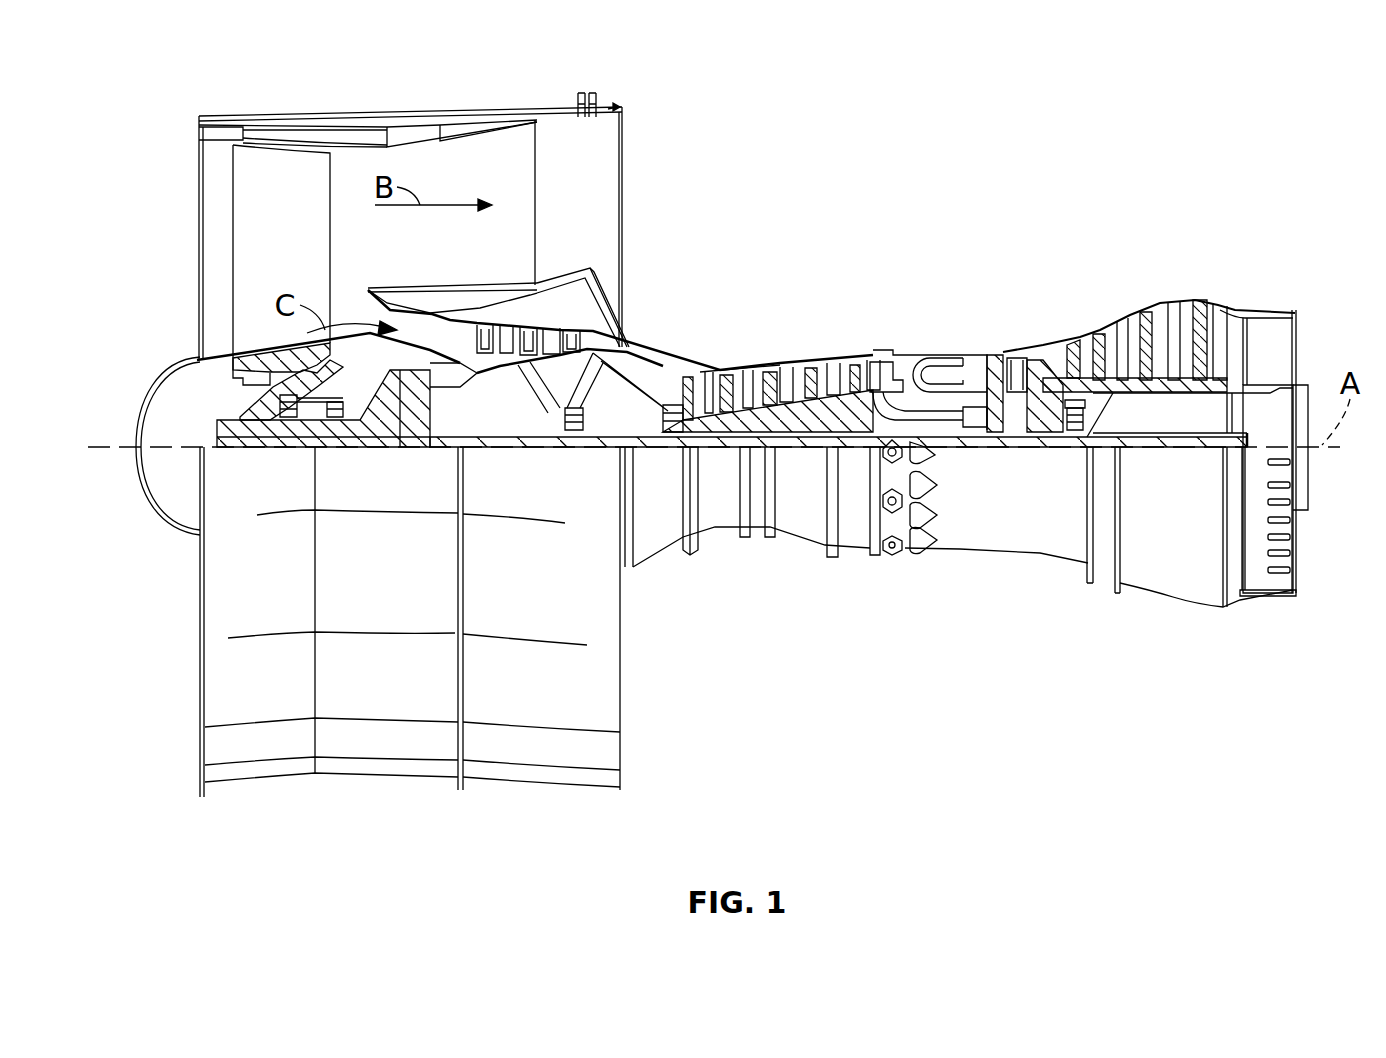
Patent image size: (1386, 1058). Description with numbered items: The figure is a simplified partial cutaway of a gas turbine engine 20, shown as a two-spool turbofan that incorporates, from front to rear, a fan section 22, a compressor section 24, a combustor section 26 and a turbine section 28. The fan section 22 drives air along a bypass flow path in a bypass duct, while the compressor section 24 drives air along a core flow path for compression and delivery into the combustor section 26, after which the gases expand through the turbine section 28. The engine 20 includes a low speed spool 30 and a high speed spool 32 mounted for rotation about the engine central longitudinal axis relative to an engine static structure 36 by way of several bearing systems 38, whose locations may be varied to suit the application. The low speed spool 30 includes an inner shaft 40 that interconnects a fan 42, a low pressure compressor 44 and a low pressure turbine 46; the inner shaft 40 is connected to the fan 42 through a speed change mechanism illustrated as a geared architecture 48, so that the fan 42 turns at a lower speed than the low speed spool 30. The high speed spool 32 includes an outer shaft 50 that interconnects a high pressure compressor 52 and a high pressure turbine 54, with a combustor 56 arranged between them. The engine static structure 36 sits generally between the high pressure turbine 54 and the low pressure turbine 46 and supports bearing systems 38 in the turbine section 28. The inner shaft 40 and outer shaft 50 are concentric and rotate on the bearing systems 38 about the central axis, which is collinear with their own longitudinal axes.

The gas turbine engine 20 is at (1243, 115).
The fan section 22 is at (295, 103).
The compressor section 24 is at (790, 245).
The combustor section 26 is at (962, 247).
The turbine section 28 is at (1110, 255).
The low speed spool 30 is at (812, 460).
The high speed spool 32 is at (868, 400).
The engine static structure 36 is at (848, 565).
The bearing systems 38 is at (292, 432).
The inner shaft 40 is at (633, 450).
The fan 42 is at (290, 257).
The low pressure compressor 44 is at (548, 325).
The low pressure turbine 46 is at (1163, 323).
The geared architecture 48 is at (416, 432).
The outer shaft 50 is at (957, 422).
The high pressure compressor 52 is at (770, 418).
The high pressure turbine 54 is at (1022, 356).
The combustor 56 is at (932, 378).